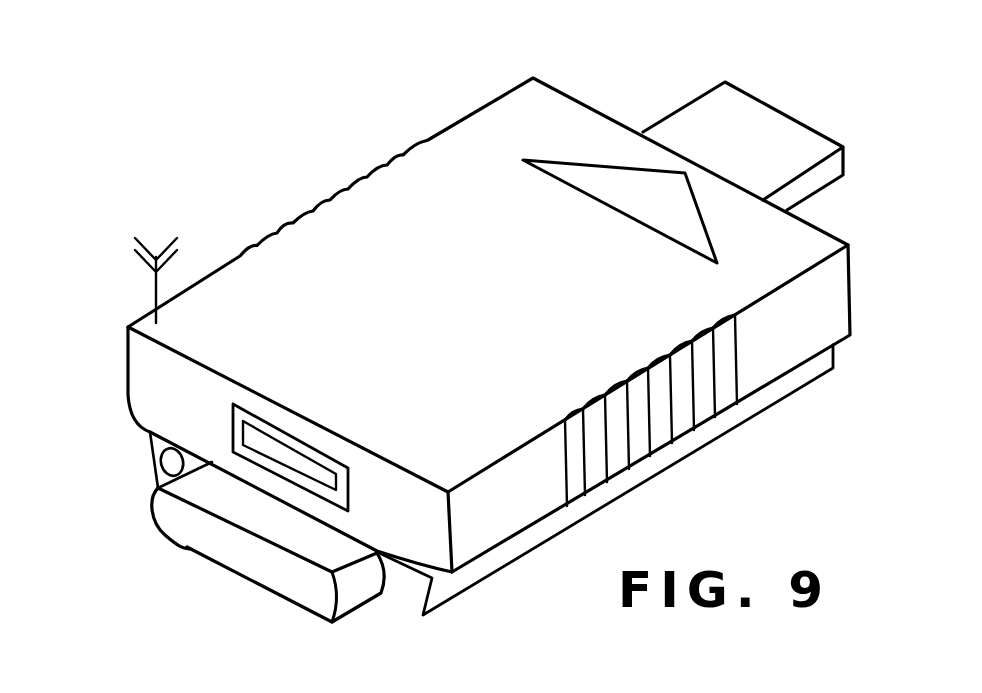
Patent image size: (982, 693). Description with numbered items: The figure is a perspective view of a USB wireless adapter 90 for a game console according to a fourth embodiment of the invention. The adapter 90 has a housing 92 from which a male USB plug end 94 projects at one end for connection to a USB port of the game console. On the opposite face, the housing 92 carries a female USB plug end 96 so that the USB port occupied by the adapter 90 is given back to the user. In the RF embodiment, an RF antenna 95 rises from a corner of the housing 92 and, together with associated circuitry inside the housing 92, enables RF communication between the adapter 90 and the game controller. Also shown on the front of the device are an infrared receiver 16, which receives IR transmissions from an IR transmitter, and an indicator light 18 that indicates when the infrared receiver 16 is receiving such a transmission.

The USB wireless adapter 90 is at (241, 188).
The housing 92 is at (386, 172).
The male USB plug end 94 is at (765, 133).
The RF antenna 95 is at (147, 282).
The female USB plug end 96 is at (232, 436).
The indicator light 18 is at (160, 476).
The infrared receiver 16 is at (193, 553).